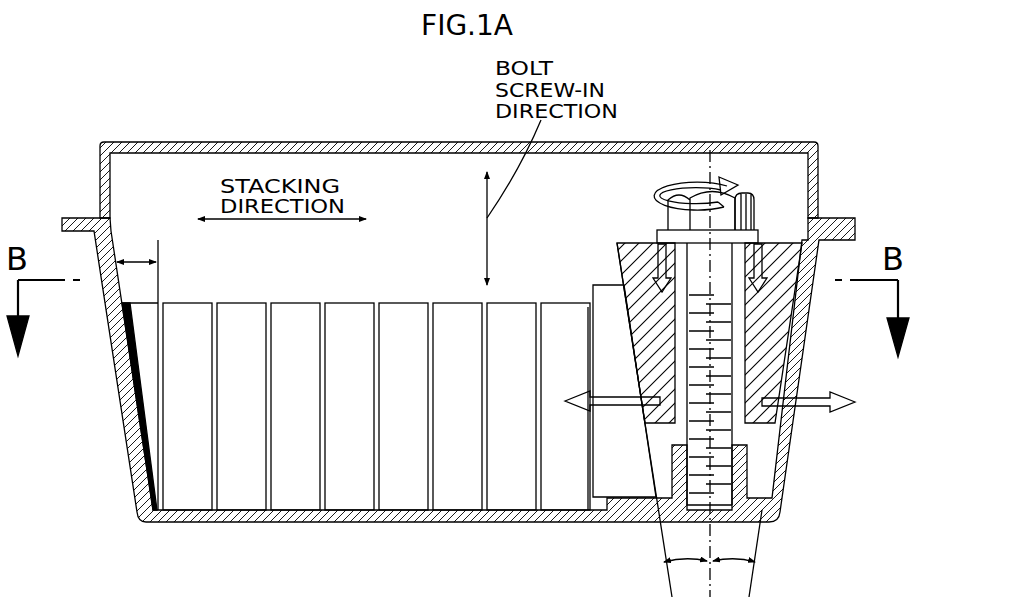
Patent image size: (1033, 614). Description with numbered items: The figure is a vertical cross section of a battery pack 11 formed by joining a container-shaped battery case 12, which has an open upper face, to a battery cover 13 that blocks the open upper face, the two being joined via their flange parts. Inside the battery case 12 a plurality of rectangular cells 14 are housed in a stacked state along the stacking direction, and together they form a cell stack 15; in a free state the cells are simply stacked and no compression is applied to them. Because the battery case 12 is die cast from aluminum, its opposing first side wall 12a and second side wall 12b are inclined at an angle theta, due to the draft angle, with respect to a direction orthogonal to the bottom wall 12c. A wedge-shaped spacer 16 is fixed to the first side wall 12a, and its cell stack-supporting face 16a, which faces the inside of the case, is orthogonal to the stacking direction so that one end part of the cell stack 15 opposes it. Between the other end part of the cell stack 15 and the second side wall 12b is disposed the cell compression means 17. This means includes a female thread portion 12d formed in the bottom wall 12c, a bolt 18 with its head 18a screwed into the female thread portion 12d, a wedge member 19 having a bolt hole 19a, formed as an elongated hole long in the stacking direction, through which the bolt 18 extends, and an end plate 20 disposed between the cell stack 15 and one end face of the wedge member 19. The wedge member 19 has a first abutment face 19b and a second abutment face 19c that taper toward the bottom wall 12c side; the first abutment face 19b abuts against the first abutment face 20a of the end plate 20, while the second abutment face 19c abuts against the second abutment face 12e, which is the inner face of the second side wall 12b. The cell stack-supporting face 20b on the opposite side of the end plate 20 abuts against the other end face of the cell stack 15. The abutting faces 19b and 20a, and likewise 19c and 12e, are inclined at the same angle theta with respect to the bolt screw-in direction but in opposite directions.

The battery pack 11 is at (307, 117).
The battery case 12 is at (106, 350).
The first side wall 12a is at (128, 457).
The second side wall 12b is at (786, 452).
The bottom wall 12c is at (402, 522).
The female thread portion 12d is at (664, 523).
The second abutment face 12e is at (776, 379).
The battery cover 13 is at (230, 142).
The rectangular cell 14 is at (577, 451).
The cell stack 15 is at (376, 346).
The wedge-shaped spacer 16 is at (128, 395).
The cell stack-supporting face 16a is at (159, 338).
The cell compression means 17 is at (654, 166).
The bolt 18 is at (762, 352).
The bolt head 18a is at (746, 193).
The wedge member 19 is at (710, 382).
The bolt hole 19a is at (740, 311).
The first abutment face 19b is at (643, 357).
The second abutment face 19c is at (800, 327).
The end plate 20 is at (586, 478).
The first abutment face 20a is at (632, 340).
The cell stack-supporting face 20b is at (592, 383).